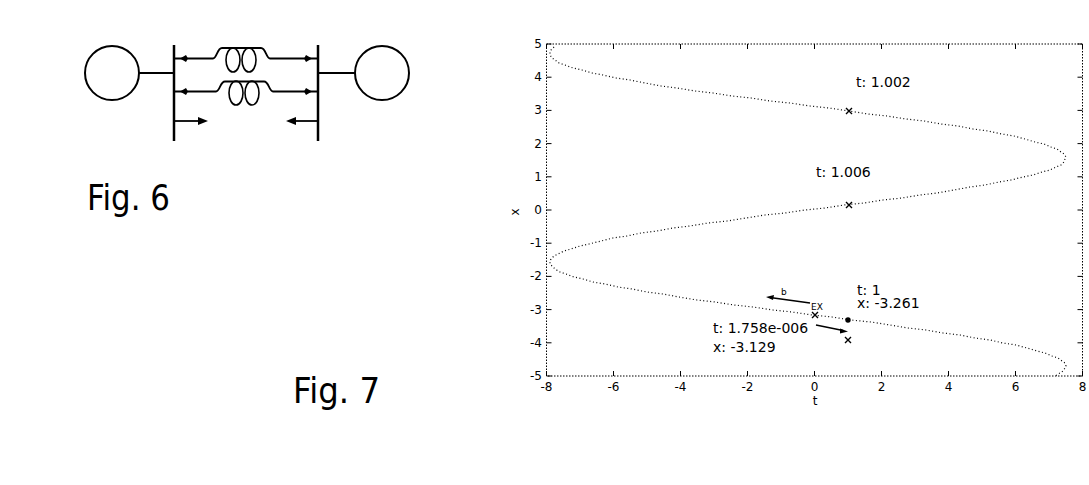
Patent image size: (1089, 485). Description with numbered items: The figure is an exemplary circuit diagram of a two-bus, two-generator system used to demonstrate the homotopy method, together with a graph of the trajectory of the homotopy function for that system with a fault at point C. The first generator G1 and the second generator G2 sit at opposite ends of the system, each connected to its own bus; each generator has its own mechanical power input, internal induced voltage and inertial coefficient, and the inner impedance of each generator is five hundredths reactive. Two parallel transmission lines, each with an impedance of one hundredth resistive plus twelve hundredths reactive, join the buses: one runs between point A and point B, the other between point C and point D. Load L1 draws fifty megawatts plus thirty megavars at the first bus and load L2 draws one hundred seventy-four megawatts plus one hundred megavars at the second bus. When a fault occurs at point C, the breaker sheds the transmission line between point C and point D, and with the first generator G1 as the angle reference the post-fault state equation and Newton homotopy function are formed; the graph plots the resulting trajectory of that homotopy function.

The generator 1 G1 is at (129, 73).
The generator 2 G2 is at (363, 73).
The load L1 is at (191, 134).
The load L2 is at (302, 134).
The point A is at (186, 50).
The point B is at (306, 50).
The point C is at (185, 83).
The point D is at (305, 83).